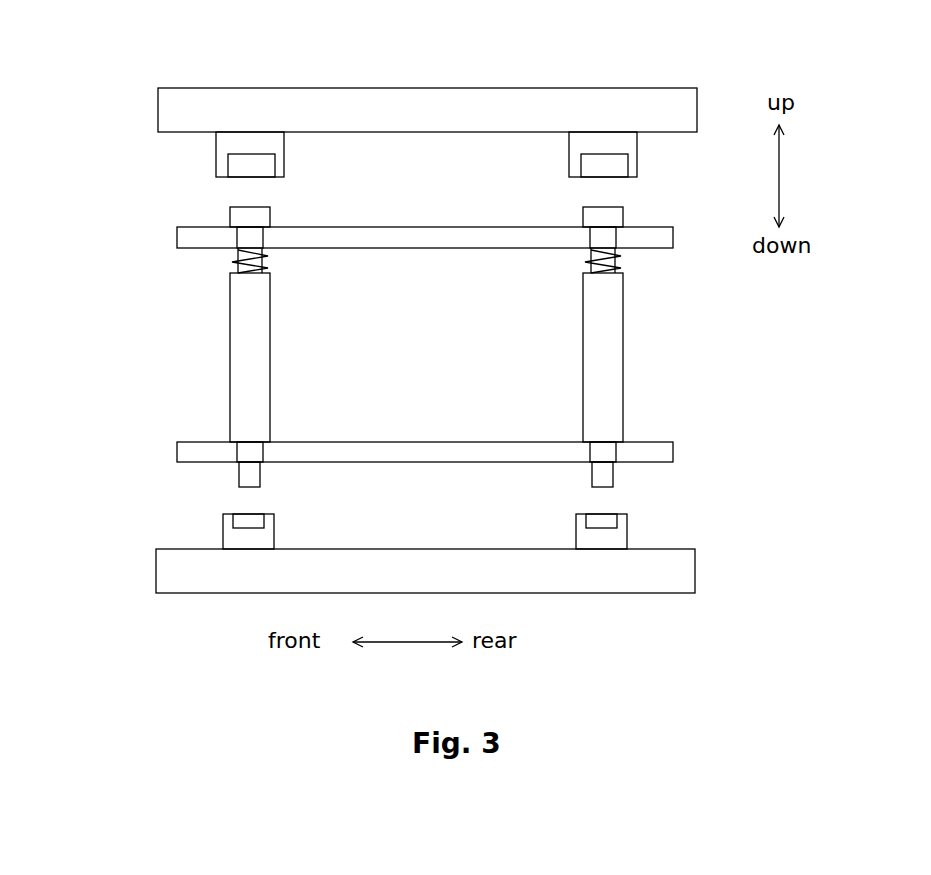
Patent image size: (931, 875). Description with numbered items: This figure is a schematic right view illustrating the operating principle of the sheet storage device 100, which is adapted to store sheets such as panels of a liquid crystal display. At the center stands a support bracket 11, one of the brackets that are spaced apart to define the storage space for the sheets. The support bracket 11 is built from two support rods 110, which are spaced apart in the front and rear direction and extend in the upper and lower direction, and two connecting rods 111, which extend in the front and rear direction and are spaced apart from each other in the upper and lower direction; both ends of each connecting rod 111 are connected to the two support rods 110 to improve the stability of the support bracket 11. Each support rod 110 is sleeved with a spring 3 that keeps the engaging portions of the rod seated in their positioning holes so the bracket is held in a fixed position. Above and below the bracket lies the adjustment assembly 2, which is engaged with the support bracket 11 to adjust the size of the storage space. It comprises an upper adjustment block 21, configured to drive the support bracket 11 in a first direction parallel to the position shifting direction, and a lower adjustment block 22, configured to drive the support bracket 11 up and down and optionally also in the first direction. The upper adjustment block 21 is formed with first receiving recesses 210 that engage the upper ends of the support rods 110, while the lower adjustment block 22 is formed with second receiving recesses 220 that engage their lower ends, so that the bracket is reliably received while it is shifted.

The sheet storage device 100 is at (493, 37).
The adjustment assembly 2 is at (413, 317).
The upper adjustment block 21 is at (250, 102).
The first receiving recess 210 is at (257, 165).
The lower adjustment block 22 is at (658, 570).
The second receiving recess 220 is at (600, 520).
The spring 3 is at (622, 267).
The support bracket 11 is at (490, 347).
The support rod 110 is at (602, 360).
The connecting rod 111 is at (638, 453).